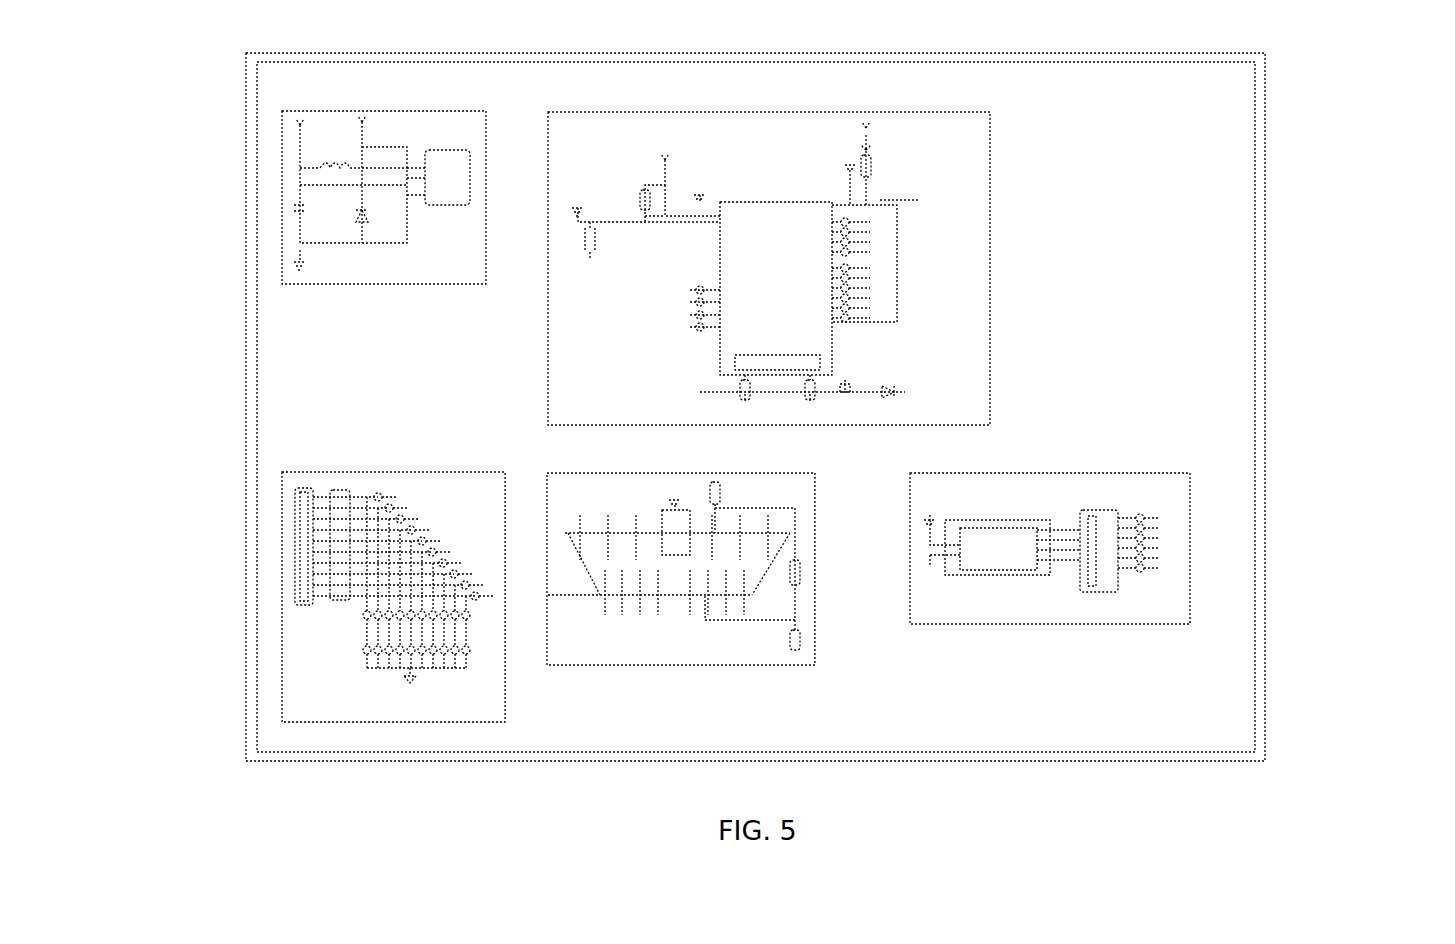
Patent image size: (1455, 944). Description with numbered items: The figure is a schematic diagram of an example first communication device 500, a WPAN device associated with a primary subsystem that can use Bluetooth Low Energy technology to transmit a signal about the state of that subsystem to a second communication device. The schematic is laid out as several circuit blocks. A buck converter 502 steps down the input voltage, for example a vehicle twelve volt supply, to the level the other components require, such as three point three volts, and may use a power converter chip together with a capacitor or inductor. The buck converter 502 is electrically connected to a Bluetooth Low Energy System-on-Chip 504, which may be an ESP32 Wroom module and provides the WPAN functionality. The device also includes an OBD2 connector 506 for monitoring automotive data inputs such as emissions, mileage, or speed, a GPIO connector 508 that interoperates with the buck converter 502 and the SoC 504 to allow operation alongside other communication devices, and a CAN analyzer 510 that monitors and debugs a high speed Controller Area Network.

The first communication device 500 is at (1314, 114).
The buck converter 502 is at (274, 263).
The Bluetooth Low Energy System-on-Chip 504 is at (996, 135).
The OBD2 connector 506 is at (600, 672).
The GPIO Connector 508 is at (274, 580).
The CAN Analyzer 510 is at (1197, 573).